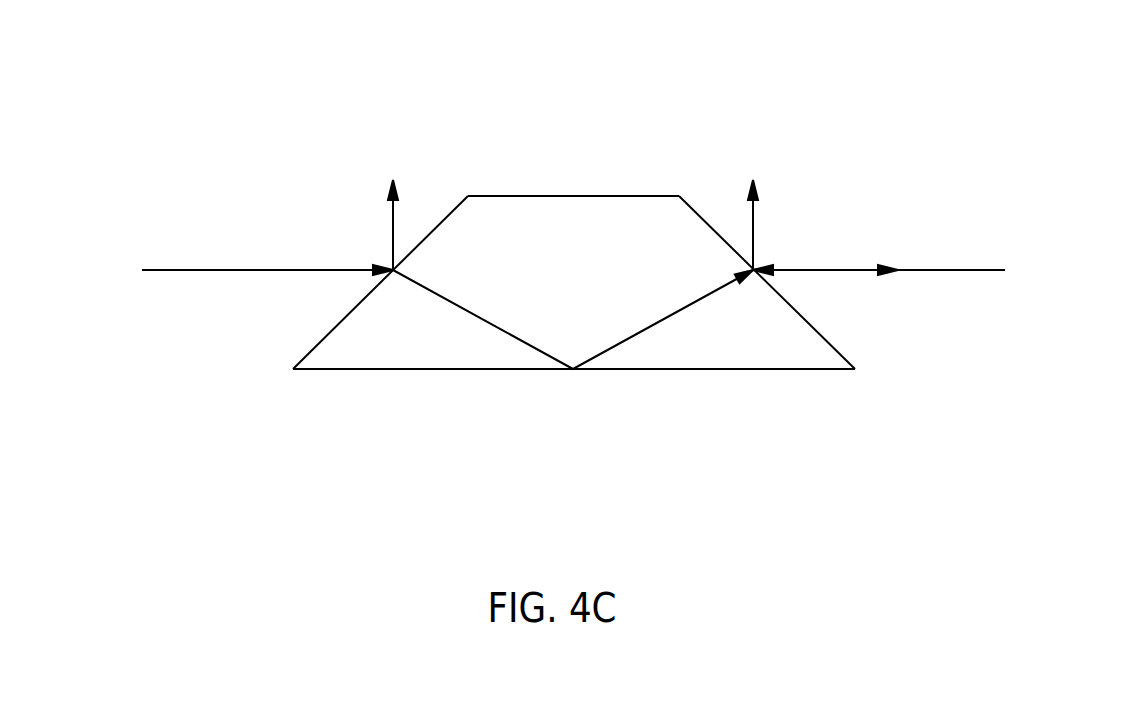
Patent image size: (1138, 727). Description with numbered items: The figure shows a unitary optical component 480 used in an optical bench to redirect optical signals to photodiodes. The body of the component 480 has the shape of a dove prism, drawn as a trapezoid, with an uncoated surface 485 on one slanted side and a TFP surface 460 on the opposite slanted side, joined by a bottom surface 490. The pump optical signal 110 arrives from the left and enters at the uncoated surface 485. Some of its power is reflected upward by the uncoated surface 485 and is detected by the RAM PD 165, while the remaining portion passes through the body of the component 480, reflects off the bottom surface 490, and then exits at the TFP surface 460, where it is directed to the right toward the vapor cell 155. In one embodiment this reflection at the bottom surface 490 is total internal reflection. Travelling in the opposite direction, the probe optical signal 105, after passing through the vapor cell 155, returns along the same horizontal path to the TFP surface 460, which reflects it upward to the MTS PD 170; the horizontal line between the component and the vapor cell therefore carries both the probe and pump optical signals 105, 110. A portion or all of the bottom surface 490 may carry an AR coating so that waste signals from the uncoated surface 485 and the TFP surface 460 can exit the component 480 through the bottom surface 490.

The probe optical signal 105 is at (830, 268).
The pump optical signal 110 is at (208, 269).
The vapor cell 155 is at (987, 233).
The RAM PD 165 is at (388, 197).
The MTS PD 170 is at (755, 198).
The TFP surface 460 is at (810, 323).
The unitary optical component 480 is at (601, 294).
The uncoated surface 485 is at (334, 327).
The bottom surface 490 is at (556, 371).